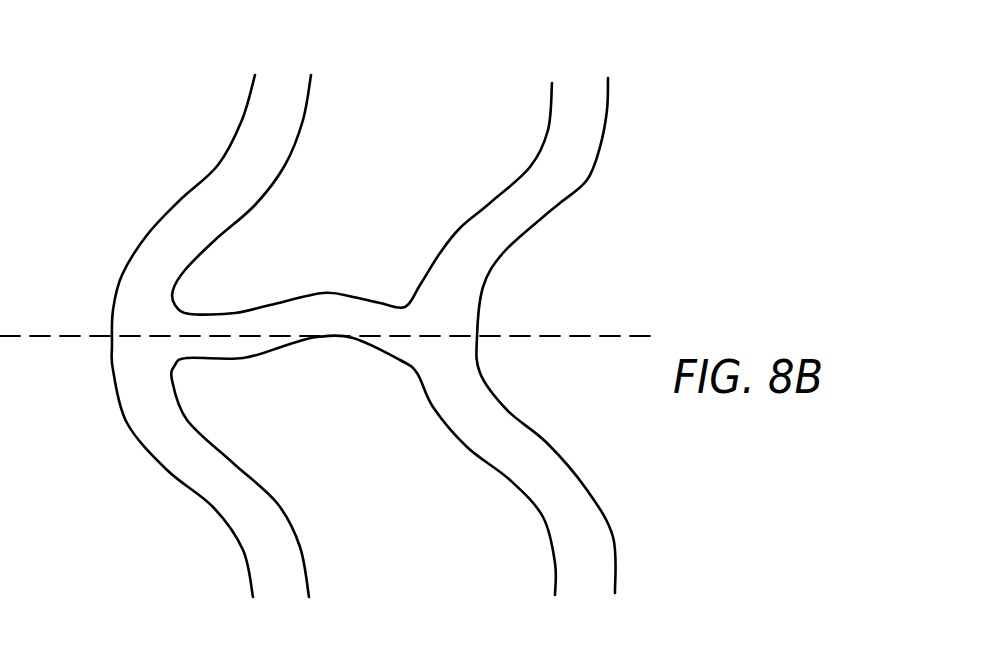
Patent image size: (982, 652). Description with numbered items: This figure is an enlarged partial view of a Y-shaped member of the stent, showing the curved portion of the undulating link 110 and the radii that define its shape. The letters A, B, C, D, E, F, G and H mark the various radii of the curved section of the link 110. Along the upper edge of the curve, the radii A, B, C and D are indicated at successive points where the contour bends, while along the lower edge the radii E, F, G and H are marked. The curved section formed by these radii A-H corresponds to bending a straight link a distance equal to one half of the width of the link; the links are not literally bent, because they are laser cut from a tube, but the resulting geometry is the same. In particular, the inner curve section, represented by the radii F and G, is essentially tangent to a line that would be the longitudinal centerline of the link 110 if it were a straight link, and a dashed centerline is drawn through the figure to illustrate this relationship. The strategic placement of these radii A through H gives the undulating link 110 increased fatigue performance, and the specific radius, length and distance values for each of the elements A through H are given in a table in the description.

The undulating link 110 is at (323, 293).
The radius element A is at (233, 313).
The radius element B is at (300, 297).
The radius element C is at (353, 297).
The radius element D is at (403, 305).
The radius element E is at (243, 358).
The radius element F is at (317, 337).
The radius element G is at (378, 347).
The radius element H is at (413, 375).